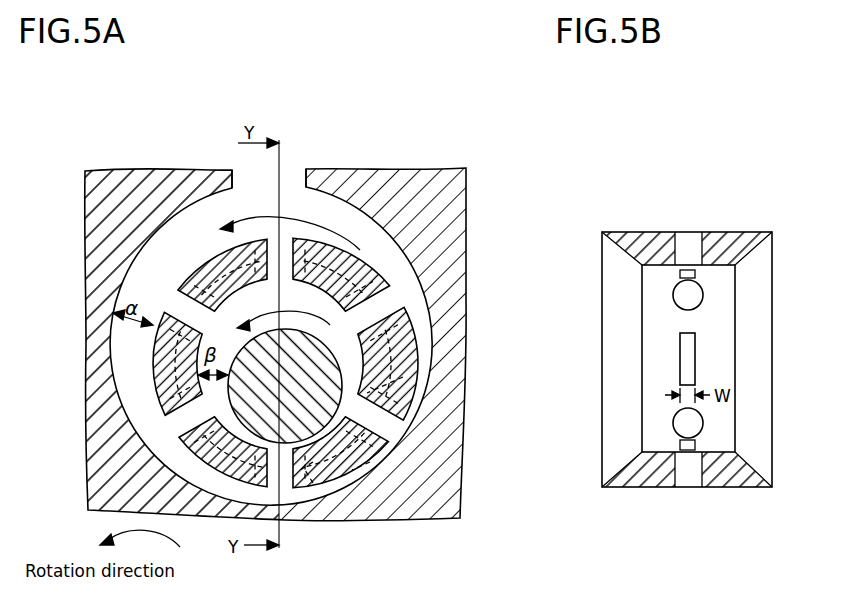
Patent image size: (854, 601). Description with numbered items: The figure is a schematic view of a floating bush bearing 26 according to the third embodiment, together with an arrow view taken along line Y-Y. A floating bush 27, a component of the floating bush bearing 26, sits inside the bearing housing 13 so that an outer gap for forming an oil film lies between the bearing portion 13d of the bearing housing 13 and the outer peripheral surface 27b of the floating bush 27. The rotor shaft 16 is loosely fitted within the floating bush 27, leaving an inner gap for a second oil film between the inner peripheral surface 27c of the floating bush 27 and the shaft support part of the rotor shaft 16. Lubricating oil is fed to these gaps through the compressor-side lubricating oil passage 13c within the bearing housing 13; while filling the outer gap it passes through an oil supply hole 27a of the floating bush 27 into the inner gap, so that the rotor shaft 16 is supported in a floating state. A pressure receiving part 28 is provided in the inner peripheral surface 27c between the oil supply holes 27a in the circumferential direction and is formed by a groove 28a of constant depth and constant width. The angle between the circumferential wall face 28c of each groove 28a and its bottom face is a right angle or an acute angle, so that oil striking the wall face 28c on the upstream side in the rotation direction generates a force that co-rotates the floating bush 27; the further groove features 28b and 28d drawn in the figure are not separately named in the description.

In FIG. 5A, the bearing housing 13 is at (414, 217).
In FIG. 5A, the compressor-side lubricating oil passage 13c is at (248, 187).
In FIG. 5A, the bearing portion 13d is at (316, 188).
In FIG. 5A, the rotor shaft 16 is at (315, 347).
In FIG. 5A, the floating bush bearing 26 is at (345, 153).
In FIG. 5A, the floating bush 27 is at (218, 287).
In FIG. 5A, the oil supply hole 27a is at (372, 297).
In FIG. 5A, the outer peripheral surface 27b is at (357, 447).
In FIG. 5A, the inner peripheral surface 27c is at (236, 444).
In FIG. 5A, the pressure receiving part 28 is at (399, 353).
In FIG. 5A, the groove 28a is at (403, 377).
In FIG. 5B, the groove 28a is at (680, 275).
In FIG. 5A, the slit groove 28b is at (313, 462).
In FIG. 5A, the wall face 28c is at (370, 462).
In FIG. 5A, the slit groove 28d is at (313, 483).